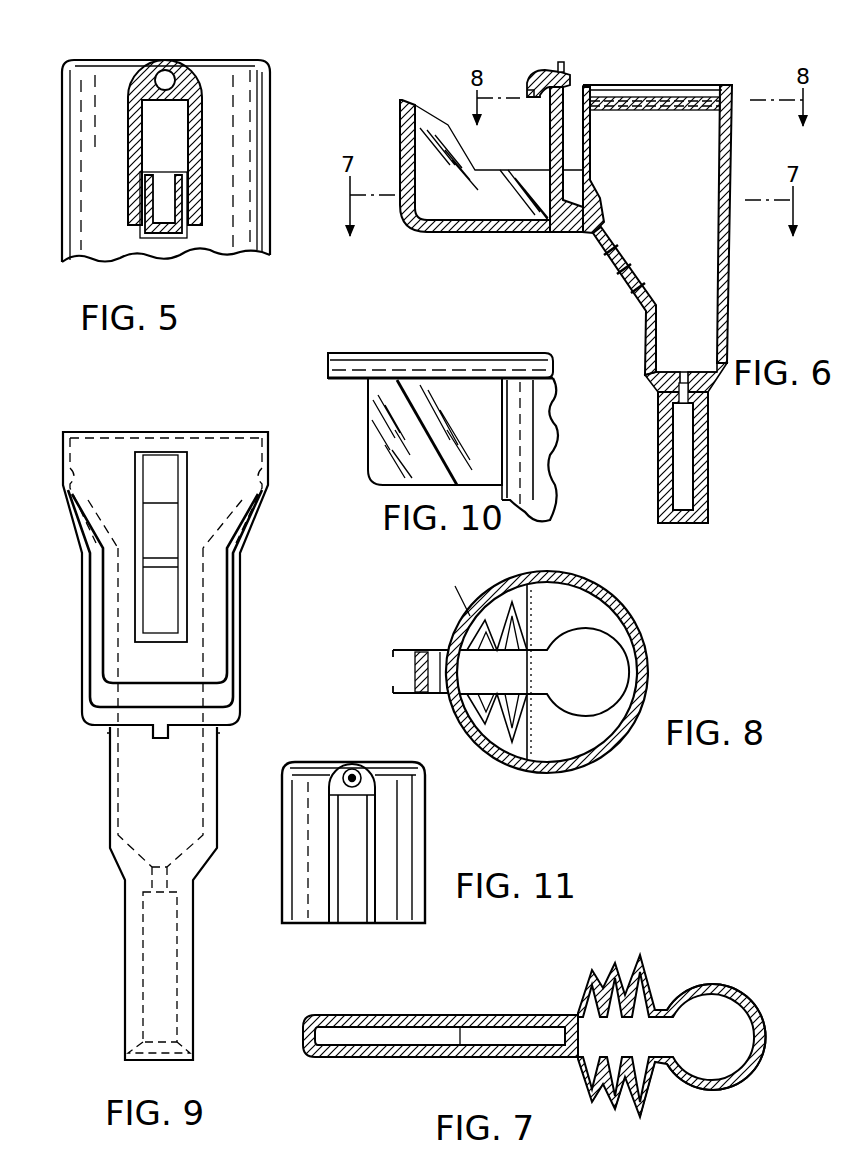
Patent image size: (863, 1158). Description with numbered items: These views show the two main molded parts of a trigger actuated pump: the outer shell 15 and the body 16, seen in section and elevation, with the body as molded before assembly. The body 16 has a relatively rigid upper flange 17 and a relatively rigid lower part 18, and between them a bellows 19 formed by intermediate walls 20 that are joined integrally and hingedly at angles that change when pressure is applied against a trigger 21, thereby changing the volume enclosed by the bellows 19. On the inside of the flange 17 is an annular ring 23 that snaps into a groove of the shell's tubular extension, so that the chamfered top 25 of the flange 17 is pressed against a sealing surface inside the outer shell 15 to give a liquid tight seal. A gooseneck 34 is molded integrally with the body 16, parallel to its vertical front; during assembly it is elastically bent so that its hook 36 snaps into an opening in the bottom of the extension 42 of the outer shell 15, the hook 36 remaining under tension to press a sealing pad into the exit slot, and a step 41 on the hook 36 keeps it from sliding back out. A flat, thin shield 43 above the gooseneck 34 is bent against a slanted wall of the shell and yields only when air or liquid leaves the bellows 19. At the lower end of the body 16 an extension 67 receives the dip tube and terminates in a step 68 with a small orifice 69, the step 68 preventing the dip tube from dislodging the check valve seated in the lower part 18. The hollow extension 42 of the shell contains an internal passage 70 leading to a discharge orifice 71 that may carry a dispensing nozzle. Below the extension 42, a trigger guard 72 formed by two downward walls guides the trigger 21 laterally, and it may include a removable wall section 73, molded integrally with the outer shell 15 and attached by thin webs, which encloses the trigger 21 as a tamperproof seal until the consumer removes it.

In FIG. 5, the outer shell 15 is at (280, 114).
In FIG. 10, the outer shell 15 is at (546, 490).
In FIG. 11, the outer shell 15 is at (312, 912).
In FIG. 6, the body 16 is at (684, 224).
In FIG. 8, the body 16 is at (660, 641).
In FIG. 9, the body 16 is at (278, 480).
In FIG. 7, the body 16 is at (768, 997).
In FIG. 6, the upper flange 17 is at (588, 142).
In FIG. 8, the upper flange 17 is at (475, 612).
In FIG. 6, the lower part 18 is at (708, 477).
In FIG. 9, the lower part 18 is at (125, 918).
In FIG. 6, the bellows 19 is at (602, 278).
In FIG. 8, the bellows 19 is at (535, 609).
In FIG. 9, the bellows 19 is at (246, 671).
In FIG. 7, the bellows 19 is at (652, 957).
In FIG. 6, the intermediate walls 20 is at (638, 288).
In FIG. 9, the intermediate walls 20 is at (88, 666).
In FIG. 7, the intermediate walls 20 is at (640, 1118).
In FIG. 5, the trigger 21 is at (171, 234).
In FIG. 6, the trigger 21 is at (450, 233).
In FIG. 7, the trigger 21 is at (423, 1015).
In FIG. 6, the annular ring 23 is at (714, 111).
In FIG. 6, the chamfered top 25 is at (724, 86).
In FIG. 6, the gooseneck 34 is at (560, 128).
In FIG. 8, the gooseneck 34 is at (416, 668).
In FIG. 6, the hook 36 is at (540, 70).
In FIG. 6, the step 41 is at (527, 90).
In FIG. 5, the extension 42 is at (184, 76).
In FIG. 10, the extension 42 is at (472, 368).
In FIG. 6, the shield 43 is at (566, 64).
In FIG. 6, the extension 67 is at (706, 512).
In FIG. 9, the extension 67 is at (137, 995).
In FIG. 6, the step 68 is at (668, 396).
In FIG. 6, the orifice 69 is at (705, 395).
In FIG. 9, the orifice 69 is at (166, 884).
In FIG. 5, the internal passage 70 is at (169, 72).
In FIG. 11, the discharge orifice 71 is at (362, 770).
In FIG. 10, the trigger guard 72 is at (472, 423).
In FIG. 10, the removable wall section 73 is at (368, 470).
In FIG. 11, the removable wall section 73 is at (372, 853).